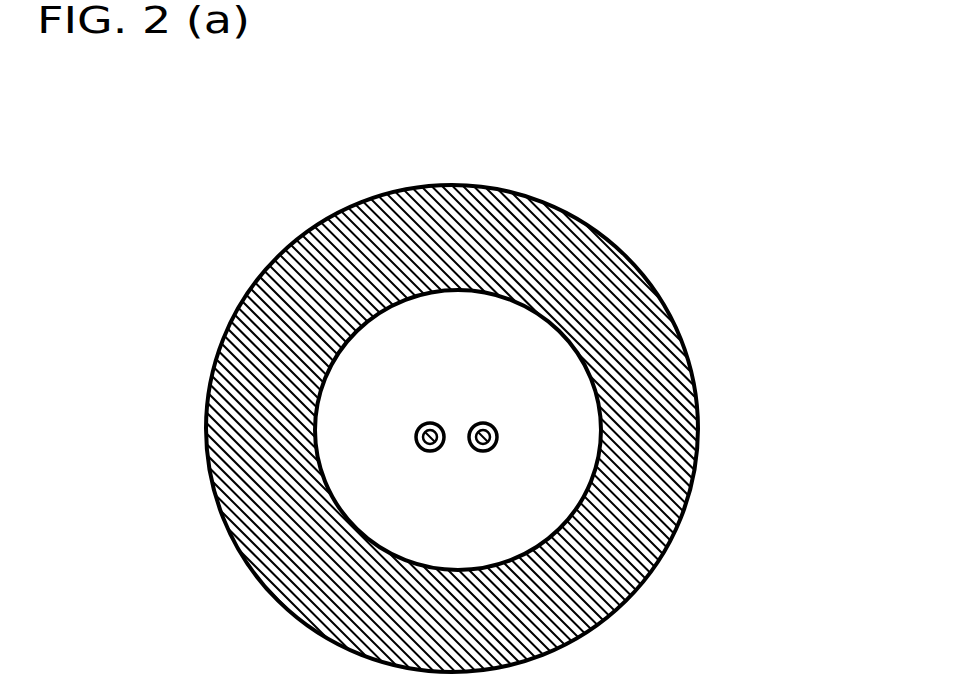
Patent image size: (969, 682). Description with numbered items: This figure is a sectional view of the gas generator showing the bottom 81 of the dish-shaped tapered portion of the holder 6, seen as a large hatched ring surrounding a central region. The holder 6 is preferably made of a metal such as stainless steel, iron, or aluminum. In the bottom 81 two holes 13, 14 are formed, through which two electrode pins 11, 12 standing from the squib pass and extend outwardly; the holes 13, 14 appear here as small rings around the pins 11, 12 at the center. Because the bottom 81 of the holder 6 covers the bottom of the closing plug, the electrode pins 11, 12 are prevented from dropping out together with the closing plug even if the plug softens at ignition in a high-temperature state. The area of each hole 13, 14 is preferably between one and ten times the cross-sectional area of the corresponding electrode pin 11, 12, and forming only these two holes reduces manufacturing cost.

The holder 6 is at (650, 316).
The bottom of the tapered portion 81 is at (490, 346).
The electrode pin 11 is at (416, 437).
The electrode pin 12 is at (493, 457).
The hole 13 is at (418, 424).
The hole 14 is at (497, 431).